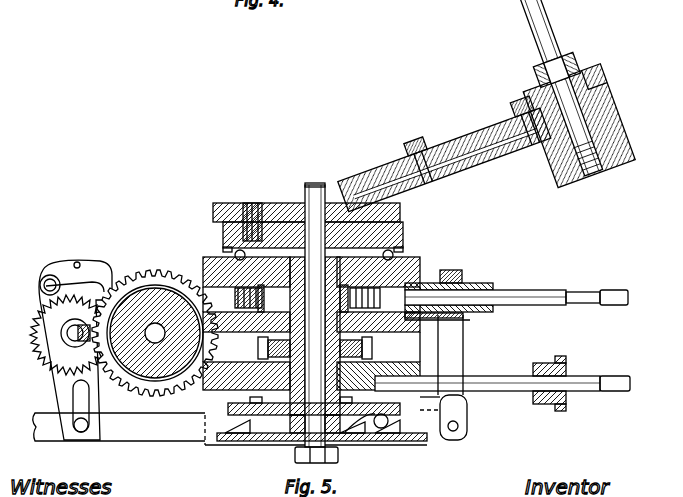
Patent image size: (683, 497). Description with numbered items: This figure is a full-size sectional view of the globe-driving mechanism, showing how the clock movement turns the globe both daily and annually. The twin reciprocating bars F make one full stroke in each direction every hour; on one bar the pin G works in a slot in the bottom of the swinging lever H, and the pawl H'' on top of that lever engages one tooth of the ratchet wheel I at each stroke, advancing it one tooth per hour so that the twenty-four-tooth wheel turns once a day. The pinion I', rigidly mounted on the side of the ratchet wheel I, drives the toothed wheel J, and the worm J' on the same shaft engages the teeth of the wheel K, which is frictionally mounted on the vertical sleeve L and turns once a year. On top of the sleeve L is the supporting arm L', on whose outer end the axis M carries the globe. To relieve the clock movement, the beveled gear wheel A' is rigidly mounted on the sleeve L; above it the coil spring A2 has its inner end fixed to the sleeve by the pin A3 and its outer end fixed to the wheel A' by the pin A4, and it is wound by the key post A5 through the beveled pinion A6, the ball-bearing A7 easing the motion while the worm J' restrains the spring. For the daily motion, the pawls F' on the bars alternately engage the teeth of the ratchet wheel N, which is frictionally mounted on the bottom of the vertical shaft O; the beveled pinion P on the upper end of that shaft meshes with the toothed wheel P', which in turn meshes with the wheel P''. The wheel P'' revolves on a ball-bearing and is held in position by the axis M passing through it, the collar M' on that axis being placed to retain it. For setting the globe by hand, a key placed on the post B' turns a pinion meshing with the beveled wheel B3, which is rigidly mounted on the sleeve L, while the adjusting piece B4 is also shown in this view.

The beveled gear wheel A' is at (344, 323).
The coil spring A2 is at (425, 262).
The pin A3 is at (405, 252).
The pin A4 is at (228, 282).
The key post A5 is at (510, 300).
The beveled pinion A6 is at (440, 275).
The ball-bearing A7 is at (246, 210).
The post B' is at (502, 378).
The beveled wheel B3 is at (228, 408).
The adjusting screw B4 is at (405, 340).
The reciprocating bar F is at (230, 429).
The pawl F' is at (322, 438).
The pin G is at (80, 428).
The swinging lever H is at (75, 350).
The pawl H'' is at (96, 333).
The ratchet wheel I is at (70, 335).
The pinion I' is at (72, 342).
The toothed wheel J is at (155, 317).
The worm J' is at (165, 291).
The toothed wheel K is at (430, 325).
The vertical sleeve L is at (314, 216).
The supporting arm L' is at (483, 161).
The axis M is at (567, 88).
The collar M' is at (564, 49).
The ratchet wheel N is at (430, 441).
The vertical shaft O is at (318, 190).
The beveled pinion P is at (307, 182).
The toothed wheel P' is at (403, 145).
The wheel P'' is at (519, 109).